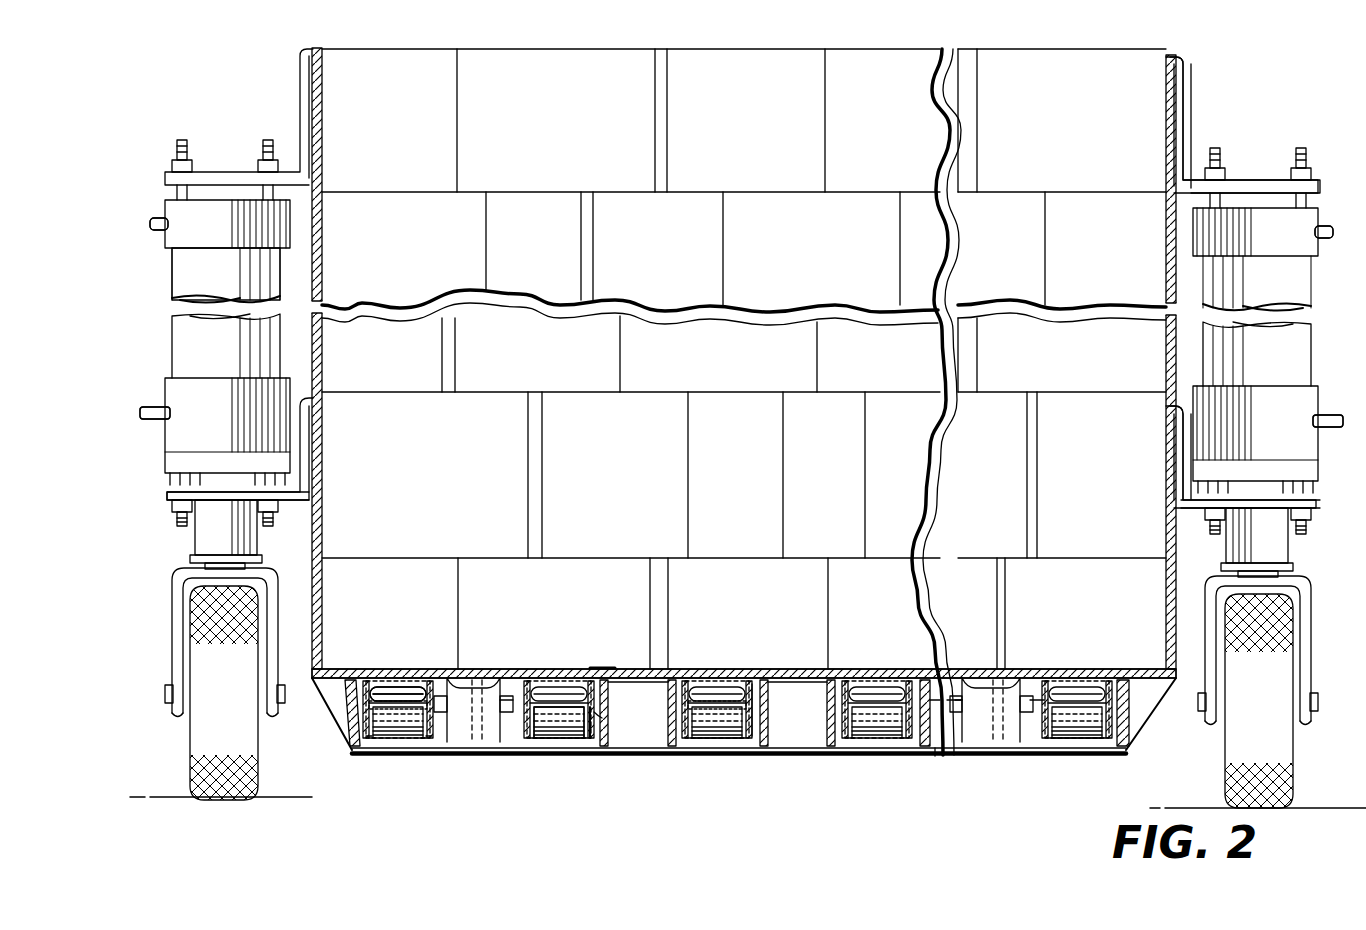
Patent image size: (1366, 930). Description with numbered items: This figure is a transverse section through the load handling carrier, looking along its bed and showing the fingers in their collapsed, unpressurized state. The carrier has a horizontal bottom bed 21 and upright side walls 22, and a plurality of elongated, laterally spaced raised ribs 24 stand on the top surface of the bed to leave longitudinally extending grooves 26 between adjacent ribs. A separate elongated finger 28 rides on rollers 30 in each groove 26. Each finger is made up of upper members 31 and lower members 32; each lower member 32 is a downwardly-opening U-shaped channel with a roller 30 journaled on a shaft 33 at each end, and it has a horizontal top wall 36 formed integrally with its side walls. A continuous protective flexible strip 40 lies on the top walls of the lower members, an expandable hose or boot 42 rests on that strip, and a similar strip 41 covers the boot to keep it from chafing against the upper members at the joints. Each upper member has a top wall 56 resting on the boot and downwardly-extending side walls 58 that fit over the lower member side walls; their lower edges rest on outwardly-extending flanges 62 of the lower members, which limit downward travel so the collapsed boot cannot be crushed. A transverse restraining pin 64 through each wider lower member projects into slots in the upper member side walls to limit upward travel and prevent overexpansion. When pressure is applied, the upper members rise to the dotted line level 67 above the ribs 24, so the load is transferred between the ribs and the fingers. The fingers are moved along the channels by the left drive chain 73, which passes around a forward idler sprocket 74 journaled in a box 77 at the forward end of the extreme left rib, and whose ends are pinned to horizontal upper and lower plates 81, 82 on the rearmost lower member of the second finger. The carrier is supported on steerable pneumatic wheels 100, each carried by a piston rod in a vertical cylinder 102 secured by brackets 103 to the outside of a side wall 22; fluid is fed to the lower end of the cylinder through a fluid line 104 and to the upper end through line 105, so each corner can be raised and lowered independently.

The horizontal bottom bed 21 is at (849, 765).
The upright side wall 22 is at (323, 545).
The raised rib 24 is at (496, 665).
The groove 26 is at (616, 736).
The finger 28 is at (884, 669).
The roller 30 is at (410, 740).
The upper member 31 is at (426, 670).
The lower member 32 is at (552, 722).
The shaft 33 is at (716, 750).
The horizontal top wall 36 is at (566, 736).
The protective flexible strip 40 is at (378, 690).
The strip 41 is at (402, 697).
The expandable hose or boot 42 is at (536, 690).
The top wall 56 is at (368, 690).
The side wall 58 is at (760, 702).
The flange 62 is at (362, 736).
The restraining pin 64 is at (598, 715).
The dotted line level 67 is at (606, 666).
The left drive chain 73 is at (952, 692).
The forward idler sprocket 74 is at (508, 692).
The box 77 is at (486, 732).
The upper plate 81 is at (935, 692).
The lower plate 82 is at (935, 756).
The pneumatic wheel 100 is at (206, 760).
The vertical cylinder 102 is at (170, 345).
The bracket 103 is at (175, 500).
The fluid line 104 is at (160, 420).
The line 105 is at (160, 240).